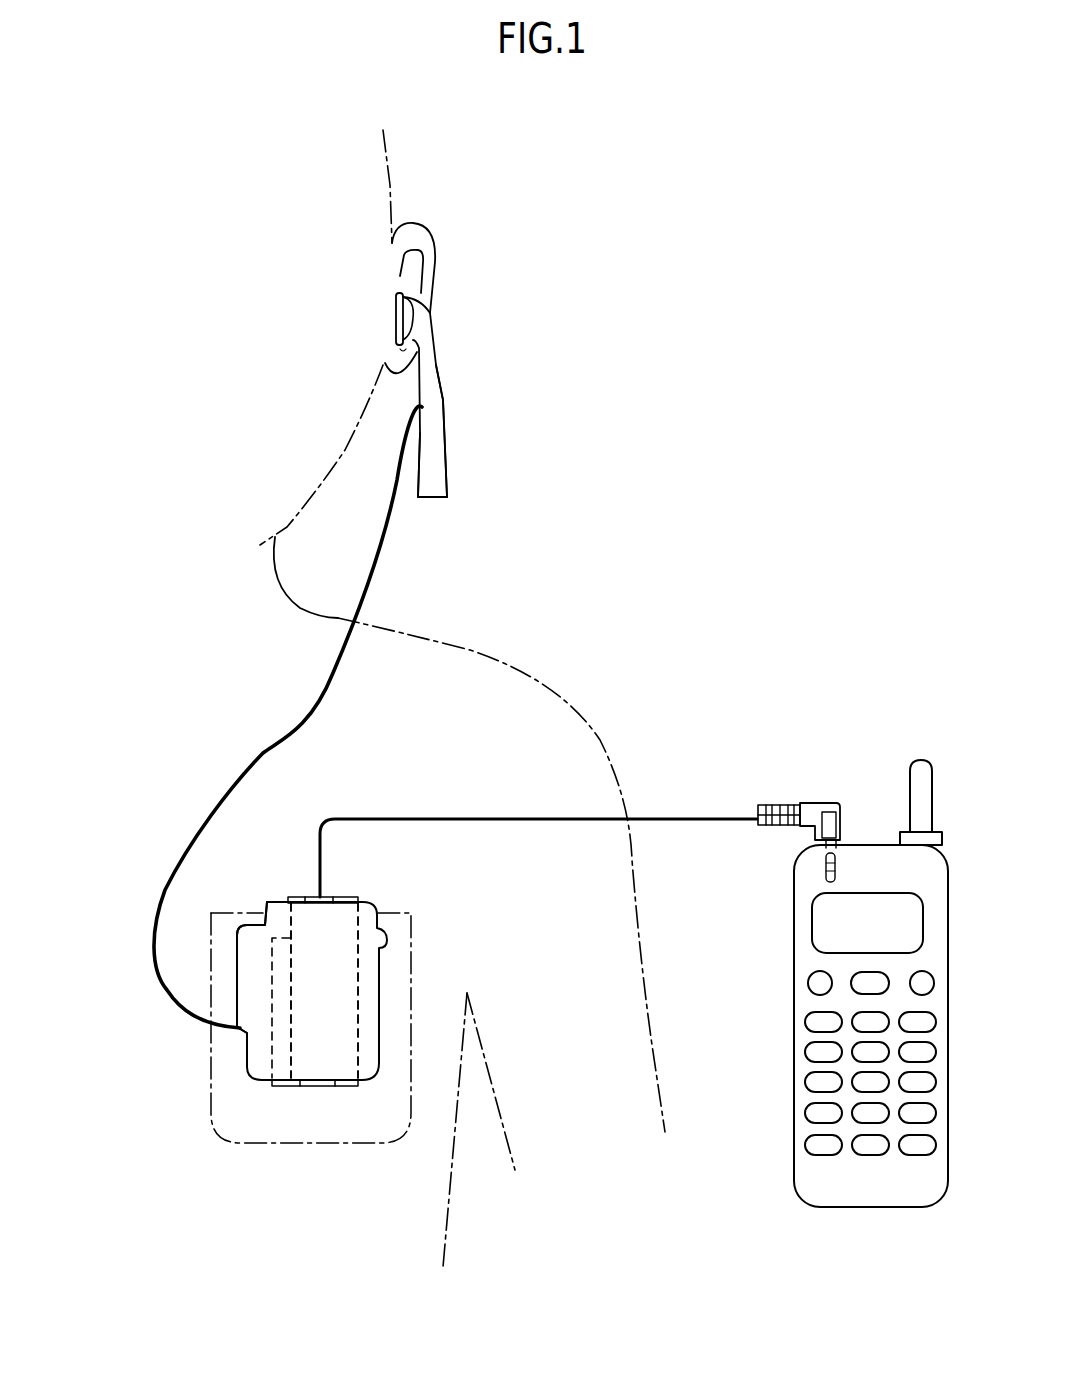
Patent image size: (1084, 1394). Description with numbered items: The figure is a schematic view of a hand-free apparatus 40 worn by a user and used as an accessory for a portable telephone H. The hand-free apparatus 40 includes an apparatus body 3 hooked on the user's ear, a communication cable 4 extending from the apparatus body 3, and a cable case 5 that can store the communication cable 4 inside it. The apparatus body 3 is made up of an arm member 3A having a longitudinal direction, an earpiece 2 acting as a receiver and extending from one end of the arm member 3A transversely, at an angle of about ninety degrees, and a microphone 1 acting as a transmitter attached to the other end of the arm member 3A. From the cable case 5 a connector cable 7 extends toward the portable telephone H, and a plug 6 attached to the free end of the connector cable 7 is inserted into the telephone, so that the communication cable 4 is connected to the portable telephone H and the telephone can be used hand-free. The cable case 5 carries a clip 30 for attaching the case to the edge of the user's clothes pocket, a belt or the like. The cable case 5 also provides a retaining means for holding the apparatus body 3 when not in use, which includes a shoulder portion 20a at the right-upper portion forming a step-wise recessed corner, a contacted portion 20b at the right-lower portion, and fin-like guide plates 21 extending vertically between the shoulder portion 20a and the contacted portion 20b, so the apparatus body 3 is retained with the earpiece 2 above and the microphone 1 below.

The microphone 1 is at (432, 498).
The earpiece 2 is at (395, 322).
The apparatus body 3 is at (444, 362).
The arm member 3A is at (441, 400).
The communication cable 4 is at (264, 756).
The cable case 5 is at (372, 901).
The plug 6 is at (827, 805).
The connector cable 7 is at (468, 818).
The shoulder portion 20a is at (256, 924).
The contacted portion 20b is at (236, 1057).
The fin-like guide plate 21 is at (237, 973).
The clip 30 is at (350, 998).
The hand-free apparatus 40 is at (560, 617).
The portable telephone H is at (873, 1208).